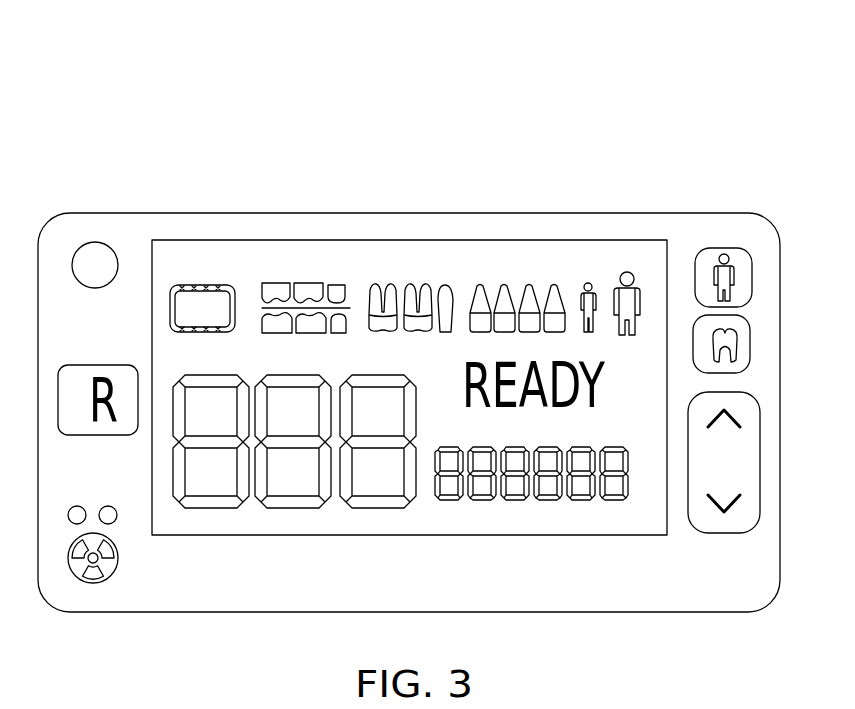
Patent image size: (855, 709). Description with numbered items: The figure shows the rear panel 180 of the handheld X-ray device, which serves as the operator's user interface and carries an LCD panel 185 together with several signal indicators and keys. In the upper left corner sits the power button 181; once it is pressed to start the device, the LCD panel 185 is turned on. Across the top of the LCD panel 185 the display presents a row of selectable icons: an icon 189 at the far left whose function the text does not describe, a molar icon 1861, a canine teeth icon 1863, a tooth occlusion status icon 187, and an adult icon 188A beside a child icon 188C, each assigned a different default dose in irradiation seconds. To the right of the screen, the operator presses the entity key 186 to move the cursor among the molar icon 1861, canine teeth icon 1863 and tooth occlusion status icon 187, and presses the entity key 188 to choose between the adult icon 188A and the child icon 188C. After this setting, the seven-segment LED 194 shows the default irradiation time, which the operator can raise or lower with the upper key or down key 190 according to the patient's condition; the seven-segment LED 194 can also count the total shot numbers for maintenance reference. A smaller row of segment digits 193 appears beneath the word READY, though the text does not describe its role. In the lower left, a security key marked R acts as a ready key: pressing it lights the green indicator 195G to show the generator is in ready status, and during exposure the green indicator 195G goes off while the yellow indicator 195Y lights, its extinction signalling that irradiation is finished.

The rear panel 180 is at (352, 212).
The power button 181 is at (108, 257).
The LCD panel 185 is at (432, 530).
The entity key 186 is at (750, 328).
The tooth occlusion status icon 187 is at (308, 283).
The entity key 188 is at (718, 245).
The adult icon 188A is at (632, 272).
The child icon 188C is at (590, 282).
The image receptor mode indicator 189 is at (203, 287).
The upper key or down key 190 is at (722, 533).
The exposure time display 193 is at (503, 500).
The 7-segment LED 194 is at (268, 508).
The green indicator 195G is at (67, 522).
The yellow indicator 195Y is at (113, 523).
The molar icon 1861 is at (393, 287).
The canine teeth icon 1863 is at (498, 285).